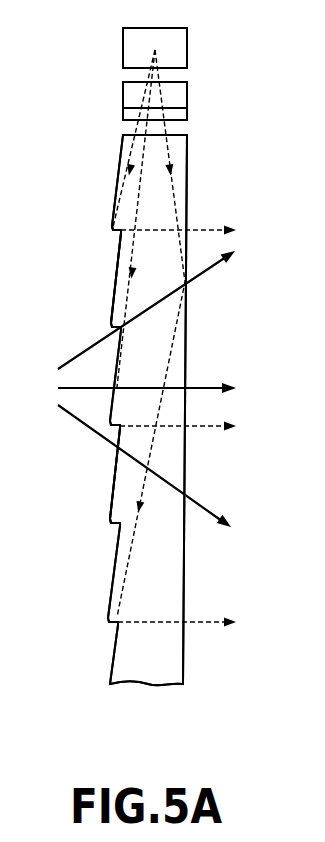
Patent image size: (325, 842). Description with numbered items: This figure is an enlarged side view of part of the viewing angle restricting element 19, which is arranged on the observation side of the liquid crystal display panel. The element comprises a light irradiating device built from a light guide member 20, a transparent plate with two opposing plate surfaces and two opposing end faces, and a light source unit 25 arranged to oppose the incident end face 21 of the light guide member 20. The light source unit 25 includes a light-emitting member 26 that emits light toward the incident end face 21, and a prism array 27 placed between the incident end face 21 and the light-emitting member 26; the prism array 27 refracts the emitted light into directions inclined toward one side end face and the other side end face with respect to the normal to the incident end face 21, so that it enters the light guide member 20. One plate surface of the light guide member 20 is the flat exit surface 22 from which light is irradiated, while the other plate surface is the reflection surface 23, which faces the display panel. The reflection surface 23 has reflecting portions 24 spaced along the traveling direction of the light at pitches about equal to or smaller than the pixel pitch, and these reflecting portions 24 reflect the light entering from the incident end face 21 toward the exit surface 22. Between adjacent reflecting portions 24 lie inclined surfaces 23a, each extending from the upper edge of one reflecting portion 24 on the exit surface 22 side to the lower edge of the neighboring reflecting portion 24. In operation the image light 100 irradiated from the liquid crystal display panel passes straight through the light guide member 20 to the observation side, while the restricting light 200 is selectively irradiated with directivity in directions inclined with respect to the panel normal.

The viewing angle restricting element 19 is at (94, 681).
The light guide member 20 is at (148, 687).
The incident end face 21 is at (125, 134).
The exit surface 22 is at (185, 563).
The reflection surface 23 is at (106, 554).
The inclined surface 23a is at (110, 303).
The reflecting portion 24 is at (115, 233).
The light source unit 25 is at (139, 69).
The light-emitting member 26 is at (182, 47).
The prism array 27 is at (188, 93).
The image light 100 is at (207, 270).
The restricting light 200 is at (197, 230).